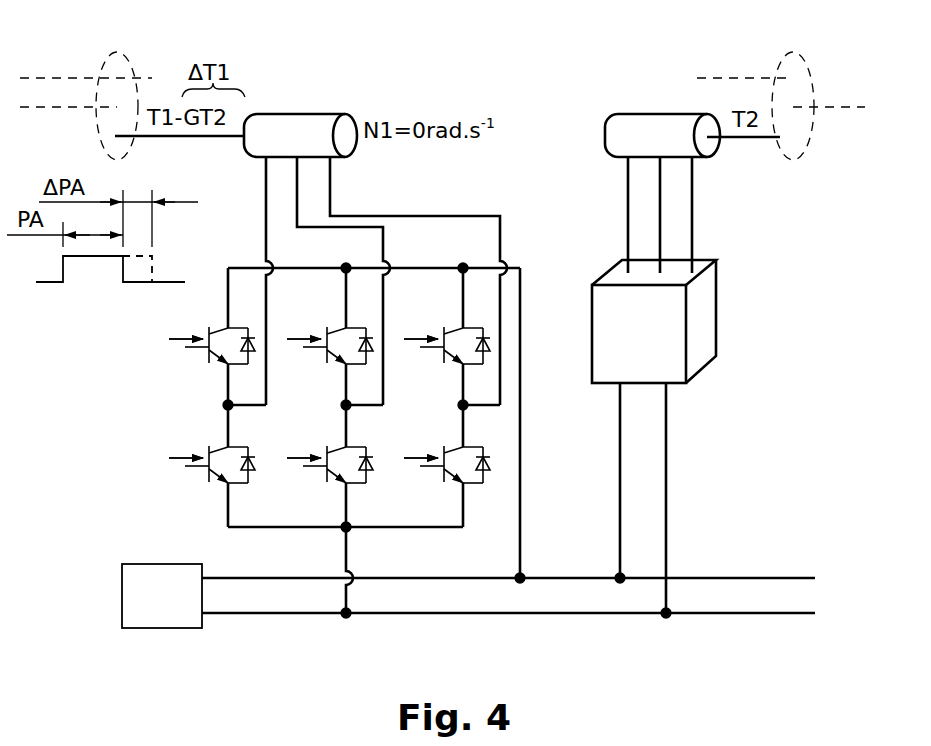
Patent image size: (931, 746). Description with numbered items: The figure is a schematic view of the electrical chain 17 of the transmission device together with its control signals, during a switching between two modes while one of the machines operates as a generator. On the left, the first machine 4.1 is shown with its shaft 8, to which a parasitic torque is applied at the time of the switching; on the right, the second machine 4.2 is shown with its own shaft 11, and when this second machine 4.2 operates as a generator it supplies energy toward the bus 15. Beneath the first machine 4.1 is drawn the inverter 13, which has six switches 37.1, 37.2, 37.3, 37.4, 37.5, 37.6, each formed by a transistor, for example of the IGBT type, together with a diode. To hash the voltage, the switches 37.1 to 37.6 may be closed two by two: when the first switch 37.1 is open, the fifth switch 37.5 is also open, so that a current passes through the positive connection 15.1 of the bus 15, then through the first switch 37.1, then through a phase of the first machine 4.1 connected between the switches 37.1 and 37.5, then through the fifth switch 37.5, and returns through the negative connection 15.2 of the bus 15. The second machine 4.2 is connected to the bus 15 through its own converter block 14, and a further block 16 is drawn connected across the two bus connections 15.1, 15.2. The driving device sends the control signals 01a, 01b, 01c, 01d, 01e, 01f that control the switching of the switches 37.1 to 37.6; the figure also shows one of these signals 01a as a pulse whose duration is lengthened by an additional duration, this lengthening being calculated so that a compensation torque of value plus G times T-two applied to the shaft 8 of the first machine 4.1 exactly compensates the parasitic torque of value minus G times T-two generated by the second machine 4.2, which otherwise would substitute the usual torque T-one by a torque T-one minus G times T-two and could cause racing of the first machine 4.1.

The electrical chain 17 is at (387, 84).
The first machine 4.1 is at (300, 114).
The second machine 4.2 is at (652, 120).
The shaft 8 is at (205, 138).
The second shaft 11 is at (752, 140).
The inverter 13 is at (521, 264).
The second converter 14 is at (705, 308).
The bus 15 is at (508, 561).
The positive connection 15.1 is at (393, 578).
The second DC bus line 15.2 is at (410, 613).
The control unit / energy storage 16 is at (163, 628).
The first switch 37.1 is at (219, 396).
The second switch 37.2 is at (337, 396).
The third switch 37.3 is at (454, 396).
The fourth switch 37.4 is at (219, 514).
The fifth switch 37.5 is at (337, 514).
The sixth switch 37.6 is at (454, 514).
The control signal 01a is at (114, 294).
The control signal 01b is at (301, 337).
The control signal 01c is at (418, 337).
The control signal 01d is at (183, 456).
The control signal 01e is at (301, 456).
The control signal 01f is at (414, 456).